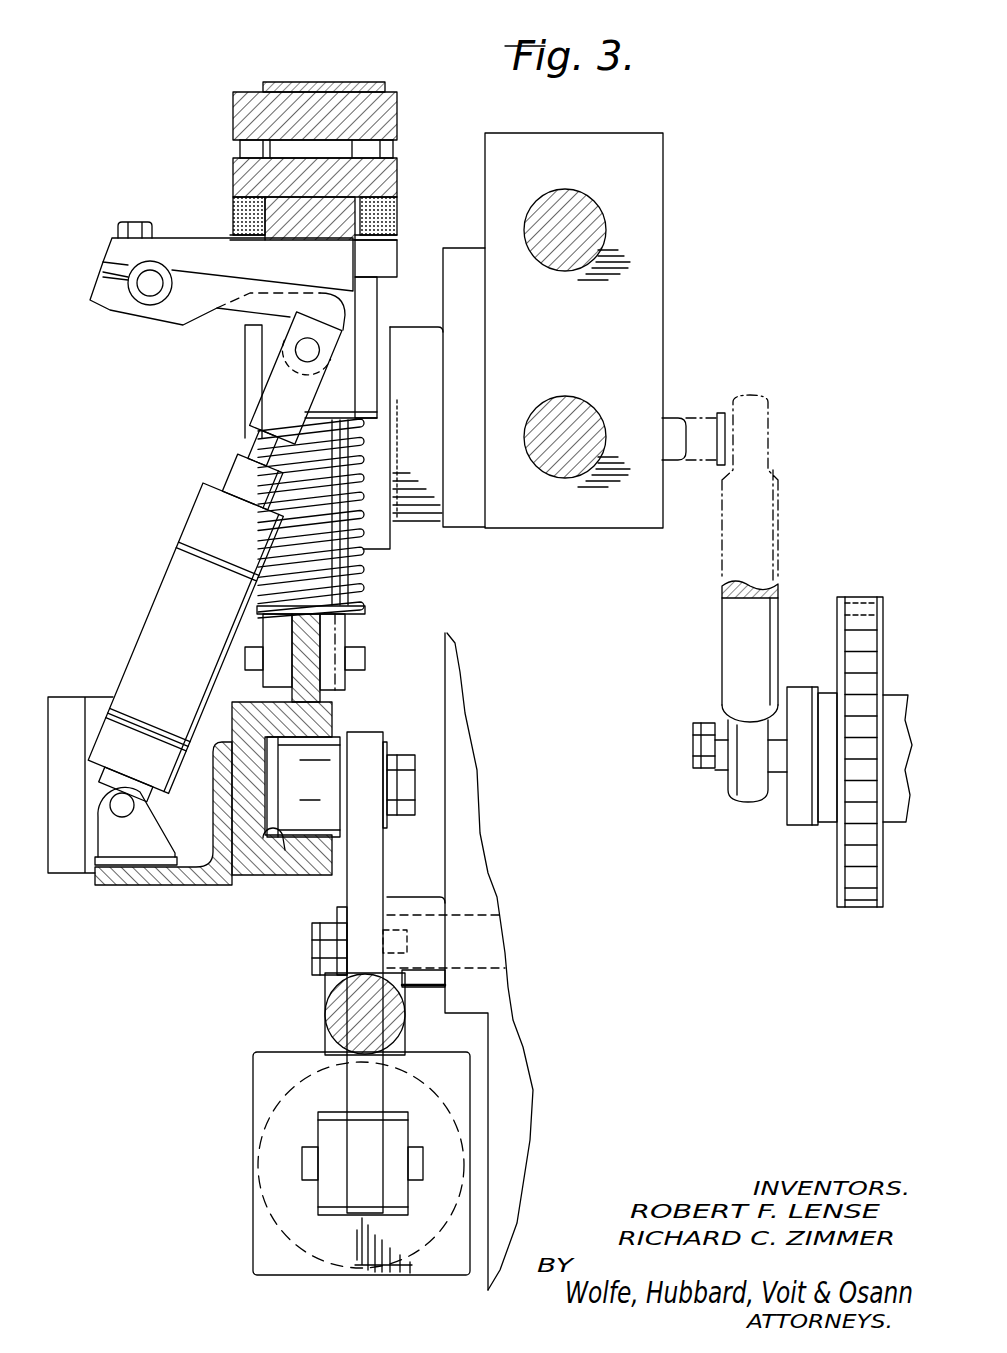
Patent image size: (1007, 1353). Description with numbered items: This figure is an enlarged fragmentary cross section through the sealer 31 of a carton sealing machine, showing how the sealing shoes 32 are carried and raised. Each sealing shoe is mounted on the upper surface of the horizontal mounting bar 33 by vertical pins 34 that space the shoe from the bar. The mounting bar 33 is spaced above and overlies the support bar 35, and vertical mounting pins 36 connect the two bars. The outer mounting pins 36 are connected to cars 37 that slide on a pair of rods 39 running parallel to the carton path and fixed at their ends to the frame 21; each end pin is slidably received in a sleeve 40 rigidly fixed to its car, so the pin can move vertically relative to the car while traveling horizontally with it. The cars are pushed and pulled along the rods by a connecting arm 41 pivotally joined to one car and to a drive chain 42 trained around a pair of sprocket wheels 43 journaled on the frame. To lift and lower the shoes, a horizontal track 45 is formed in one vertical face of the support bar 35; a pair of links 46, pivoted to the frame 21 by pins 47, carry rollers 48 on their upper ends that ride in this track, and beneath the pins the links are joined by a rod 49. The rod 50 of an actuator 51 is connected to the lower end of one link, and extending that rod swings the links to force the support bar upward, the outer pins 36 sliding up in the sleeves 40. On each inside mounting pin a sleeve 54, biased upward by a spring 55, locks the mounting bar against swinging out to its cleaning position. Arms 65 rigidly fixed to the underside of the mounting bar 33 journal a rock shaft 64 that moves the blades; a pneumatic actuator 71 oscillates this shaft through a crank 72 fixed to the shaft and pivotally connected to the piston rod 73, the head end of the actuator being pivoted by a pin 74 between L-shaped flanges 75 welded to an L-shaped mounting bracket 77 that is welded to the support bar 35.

The frame 21 is at (480, 832).
The sealer 31 is at (181, 92).
The sealing shoes 32 is at (270, 82).
The mounting bar 33 is at (235, 183).
The vertical pins 34 is at (238, 148).
The support bar 35 is at (335, 713).
The mounting pins 36 is at (352, 650).
The cars 37 is at (665, 275).
The rods 39 is at (582, 195).
The sleeves 40 is at (392, 528).
The connecting arm 41 is at (725, 633).
The drive chain 42 is at (880, 598).
The sprocket wheels 43 is at (860, 597).
The track 45 is at (288, 850).
The links 46 is at (380, 870).
The pins 47 is at (475, 910).
The rollers 48 is at (325, 796).
The rod 49 is at (333, 1003).
The rod of actuator 50 is at (318, 1113).
The actuator 51 is at (258, 1205).
The sleeve 54 is at (370, 325).
The spring 55 is at (360, 600).
The rock shaft 64 is at (150, 295).
The arms 65 is at (205, 243).
The pneumatic actuator 71 is at (170, 580).
The crank 72 is at (238, 320).
The piston rod 73 is at (255, 455).
The pin 74 is at (124, 794).
The L-shaped flanges 75 is at (155, 835).
The L-shaped mounting bracket 77 is at (165, 887).